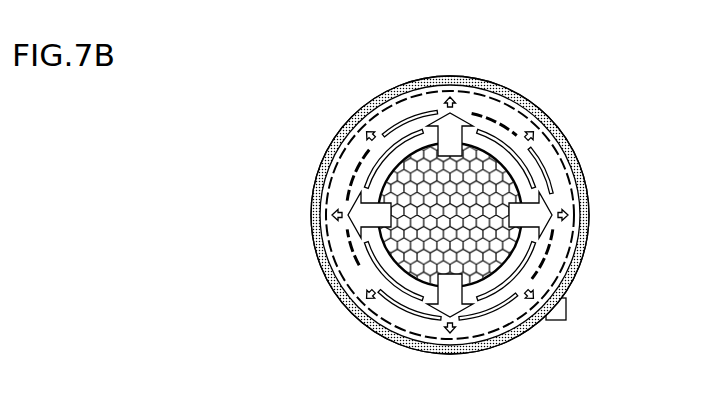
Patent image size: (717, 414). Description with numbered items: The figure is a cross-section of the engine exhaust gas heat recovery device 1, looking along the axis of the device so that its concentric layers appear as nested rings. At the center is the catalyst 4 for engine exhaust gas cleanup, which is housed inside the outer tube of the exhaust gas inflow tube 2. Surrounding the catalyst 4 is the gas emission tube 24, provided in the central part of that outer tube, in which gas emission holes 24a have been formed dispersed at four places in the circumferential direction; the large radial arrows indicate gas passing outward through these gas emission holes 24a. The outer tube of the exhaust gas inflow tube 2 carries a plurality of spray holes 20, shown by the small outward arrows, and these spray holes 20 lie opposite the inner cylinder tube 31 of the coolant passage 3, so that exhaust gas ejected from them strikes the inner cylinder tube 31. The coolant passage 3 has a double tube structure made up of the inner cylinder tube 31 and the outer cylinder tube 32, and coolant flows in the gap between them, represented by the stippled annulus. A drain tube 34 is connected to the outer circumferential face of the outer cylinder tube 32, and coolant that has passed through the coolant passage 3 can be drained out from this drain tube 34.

The engine exhaust gas heat recovery device 1 is at (204, 113).
The exhaust gas inflow tube 2 is at (578, 262).
The coolant passage 3 is at (481, 195).
The catalyst 4 is at (503, 185).
The spray holes 20 is at (566, 214).
The gas emission tube 24 is at (375, 172).
The gas emission holes 24a is at (372, 197).
The inner cylinder tube 31 is at (534, 108).
The outer cylinder tube 32 is at (500, 81).
The drain tube 34 is at (566, 312).